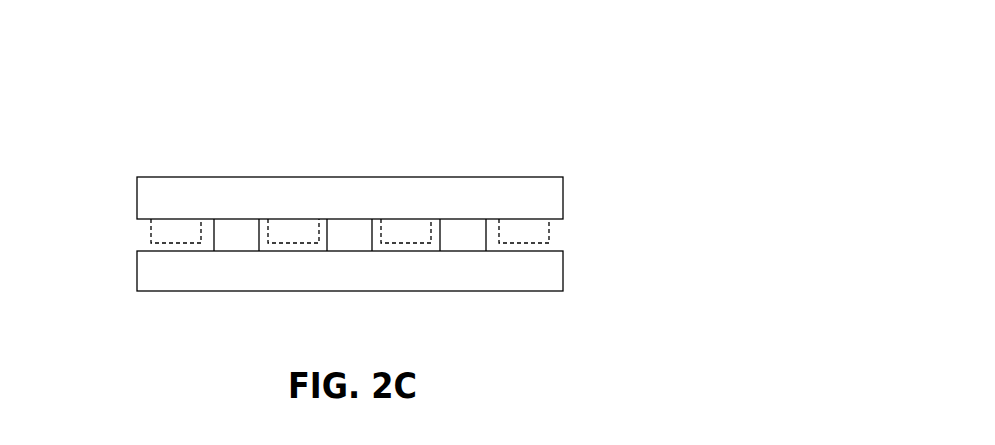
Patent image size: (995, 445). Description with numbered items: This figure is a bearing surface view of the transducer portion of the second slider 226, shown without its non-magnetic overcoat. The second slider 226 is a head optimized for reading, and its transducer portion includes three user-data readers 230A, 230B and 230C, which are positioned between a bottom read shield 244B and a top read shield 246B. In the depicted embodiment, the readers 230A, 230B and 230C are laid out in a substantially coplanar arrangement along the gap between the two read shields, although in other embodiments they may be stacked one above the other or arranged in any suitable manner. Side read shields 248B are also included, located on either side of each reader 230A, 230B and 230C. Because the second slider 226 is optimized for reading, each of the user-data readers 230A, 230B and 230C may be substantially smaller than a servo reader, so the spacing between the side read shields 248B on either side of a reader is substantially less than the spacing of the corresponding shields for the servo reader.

The second slider 226 is at (603, 124).
The top read shield 246B is at (550, 189).
The bottom read shield 244B is at (550, 274).
The user-data reader 230A is at (230, 239).
The user-data reader 230B is at (352, 240).
The user-data reader 230C is at (462, 240).
The side read shields 248B is at (158, 232).